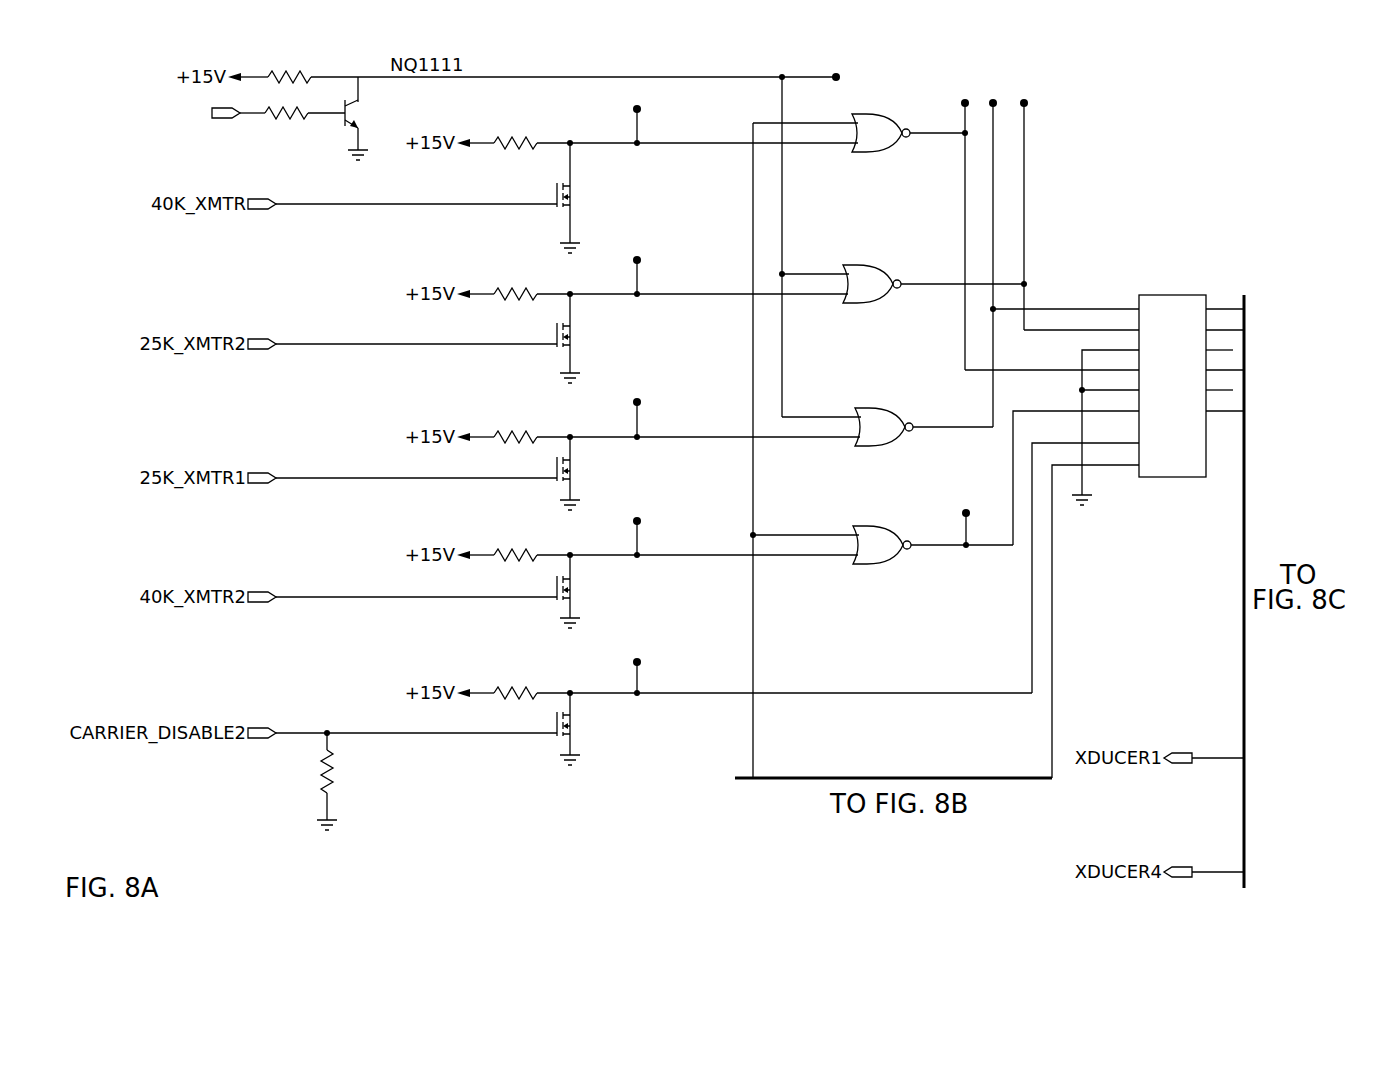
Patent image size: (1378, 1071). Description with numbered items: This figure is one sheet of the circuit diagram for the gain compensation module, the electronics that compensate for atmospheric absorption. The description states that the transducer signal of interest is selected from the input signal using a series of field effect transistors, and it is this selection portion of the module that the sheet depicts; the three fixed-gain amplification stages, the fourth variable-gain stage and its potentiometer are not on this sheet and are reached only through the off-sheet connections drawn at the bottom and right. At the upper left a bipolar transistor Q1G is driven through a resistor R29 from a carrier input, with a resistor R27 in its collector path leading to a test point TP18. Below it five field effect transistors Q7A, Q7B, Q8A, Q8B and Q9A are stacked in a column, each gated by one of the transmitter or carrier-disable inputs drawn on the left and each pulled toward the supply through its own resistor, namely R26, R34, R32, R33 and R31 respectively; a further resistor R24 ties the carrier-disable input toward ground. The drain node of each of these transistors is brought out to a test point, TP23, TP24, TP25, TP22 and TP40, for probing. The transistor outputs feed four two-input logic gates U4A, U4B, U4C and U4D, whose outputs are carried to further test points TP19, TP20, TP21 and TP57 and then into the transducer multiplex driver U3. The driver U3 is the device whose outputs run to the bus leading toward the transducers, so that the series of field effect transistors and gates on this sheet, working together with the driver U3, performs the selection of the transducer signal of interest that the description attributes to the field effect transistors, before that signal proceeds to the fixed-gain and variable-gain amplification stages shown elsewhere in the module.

The resistor 15k R27 is at (293, 63).
The resistor 5.1K R29 is at (247, 115).
The transistor 2N2222 Q1G is at (390, 118).
The test point TP18 is at (854, 70).
The resistor 15k R26 is at (513, 140).
The test point TP23 is at (642, 115).
The MOSFET FDG6301N Q7A is at (609, 198).
The resistor 15k R34 is at (513, 291).
The test point TP24 is at (642, 266).
The MOSFET FDG6301N Q7B is at (609, 338).
The resistor 15k R32 is at (513, 434).
The test point TP25 is at (642, 408).
The MOSFET FDG6301N Q8A is at (609, 473).
The resistor 15k R33 is at (513, 552).
The test point TP22 is at (642, 527).
The MOSFET FDG6301N Q8B is at (609, 591).
The resistor 15k R31 is at (513, 690).
The test point TP40 is at (642, 666).
The MOSFET FDG6301N Q9A is at (609, 729).
The resistor 39k R24 is at (344, 780).
The NOR gate CD4001BCM U4A is at (881, 546).
The NOR gate CD4001BCM U4B is at (859, 134).
The NOR gate CD4001BCM U4C is at (901, 285).
The NOR gate CD4001BCM U4D is at (887, 428).
The test point TP57 is at (970, 517).
The test point TP19 is at (956, 210).
The test point TP20 is at (984, 238).
The test point TP21 is at (1015, 190).
The transducer multiplex driver CD4503BCM U3 is at (1179, 348).